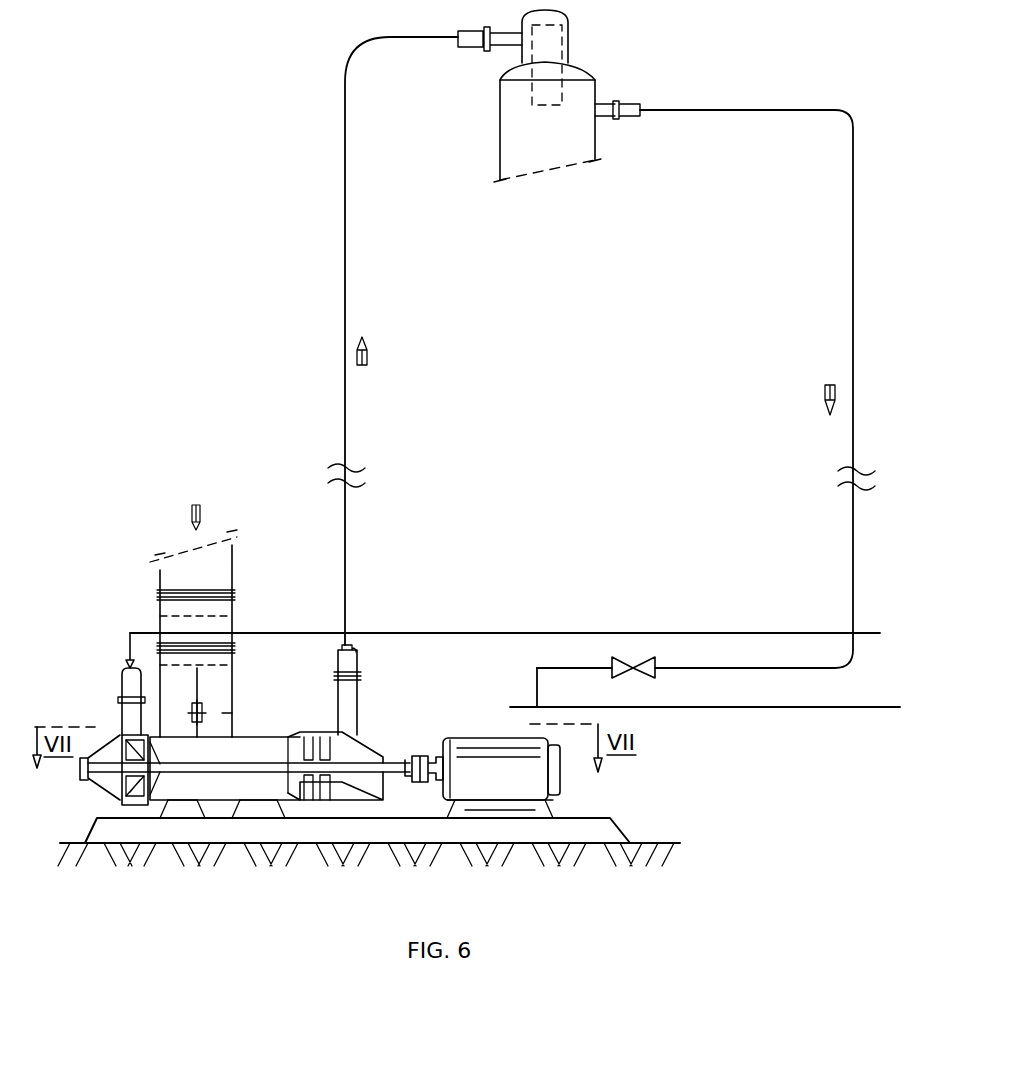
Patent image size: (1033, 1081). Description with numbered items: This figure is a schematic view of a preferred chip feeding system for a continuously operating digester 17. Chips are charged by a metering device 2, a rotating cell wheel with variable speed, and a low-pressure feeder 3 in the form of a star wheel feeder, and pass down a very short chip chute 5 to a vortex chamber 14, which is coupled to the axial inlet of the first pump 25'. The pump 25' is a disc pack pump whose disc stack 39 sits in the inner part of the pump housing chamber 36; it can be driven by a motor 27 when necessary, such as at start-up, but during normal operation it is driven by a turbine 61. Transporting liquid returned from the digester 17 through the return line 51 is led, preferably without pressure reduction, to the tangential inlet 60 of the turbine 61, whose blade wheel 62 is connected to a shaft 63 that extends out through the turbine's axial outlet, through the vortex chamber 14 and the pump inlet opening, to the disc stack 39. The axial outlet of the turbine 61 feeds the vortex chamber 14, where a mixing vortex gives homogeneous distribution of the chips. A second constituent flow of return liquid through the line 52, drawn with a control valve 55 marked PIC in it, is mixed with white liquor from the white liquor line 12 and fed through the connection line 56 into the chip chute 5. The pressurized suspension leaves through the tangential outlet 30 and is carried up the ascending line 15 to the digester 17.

The metering device 2 is at (160, 600).
The low-pressure feeder 3 is at (160, 662).
The chip chute 5 is at (233, 713).
The white liquor line 12 is at (768, 708).
The vortex chamber 14 is at (258, 795).
The ascending line 15 is at (347, 432).
The digester 17 is at (500, 136).
The first pump 25' is at (405, 739).
The motor 27 is at (562, 778).
The tangential outlet 30 is at (350, 700).
The pump housing chamber 36 is at (310, 733).
The disc stack 39 is at (309, 745).
The return line 51 is at (592, 633).
The return line 52 is at (855, 652).
The control valve 55 is at (650, 672).
The connection line 56 is at (535, 682).
The tangential inlet 60 is at (118, 688).
The turbine 61 is at (118, 740).
The blade wheel 62 is at (126, 788).
The shaft 63 is at (213, 770).